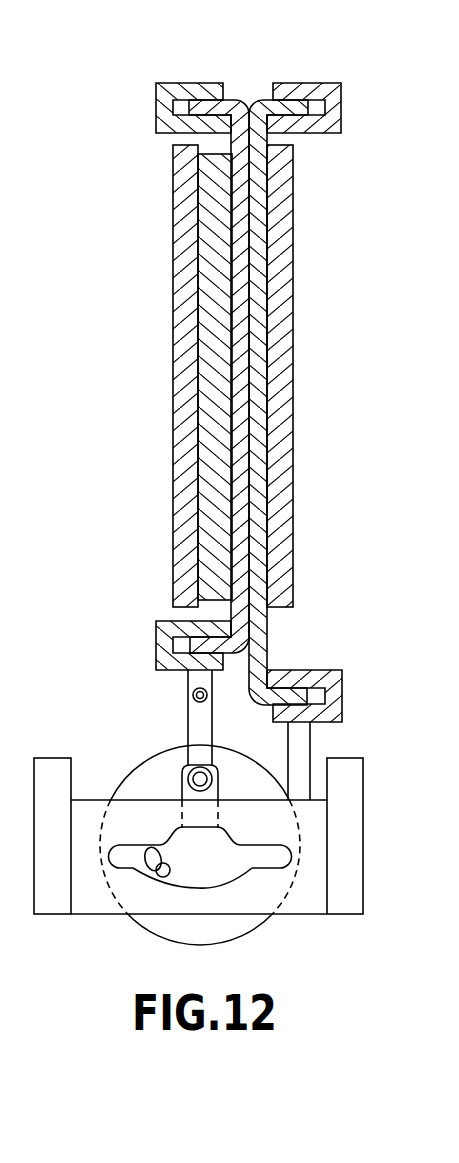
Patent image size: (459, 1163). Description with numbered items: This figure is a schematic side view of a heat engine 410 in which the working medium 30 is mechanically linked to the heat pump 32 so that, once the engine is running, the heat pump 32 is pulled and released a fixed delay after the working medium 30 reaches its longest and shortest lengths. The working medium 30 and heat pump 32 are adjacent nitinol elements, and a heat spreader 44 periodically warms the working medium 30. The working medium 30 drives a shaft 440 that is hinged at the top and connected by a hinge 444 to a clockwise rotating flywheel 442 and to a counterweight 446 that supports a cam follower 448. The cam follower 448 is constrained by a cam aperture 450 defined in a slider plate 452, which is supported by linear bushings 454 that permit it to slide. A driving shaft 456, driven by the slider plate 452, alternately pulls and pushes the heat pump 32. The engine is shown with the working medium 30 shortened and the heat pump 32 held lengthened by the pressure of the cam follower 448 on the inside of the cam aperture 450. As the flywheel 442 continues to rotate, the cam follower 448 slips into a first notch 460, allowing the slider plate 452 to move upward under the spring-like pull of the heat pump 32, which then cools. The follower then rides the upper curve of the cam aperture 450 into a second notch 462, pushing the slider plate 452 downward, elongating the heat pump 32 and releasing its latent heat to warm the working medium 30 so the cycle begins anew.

The heat engine 410 is at (106, 151).
The working medium 30 is at (248, 99).
The heat pump 32 is at (268, 630).
The heat spreader 44 is at (215, 273).
The shaft 440 is at (187, 700).
The flywheel 442 is at (153, 772).
The hinge 444 is at (240, 762).
The counterweight 446 is at (240, 852).
The cam follower 448 is at (162, 863).
The cam aperture 450 is at (200, 888).
The slider plate 452 is at (92, 810).
The linear bushings 454 is at (53, 757).
The driving shaft 456 is at (311, 735).
The first notch 460 is at (124, 872).
The second notch 462 is at (278, 872).